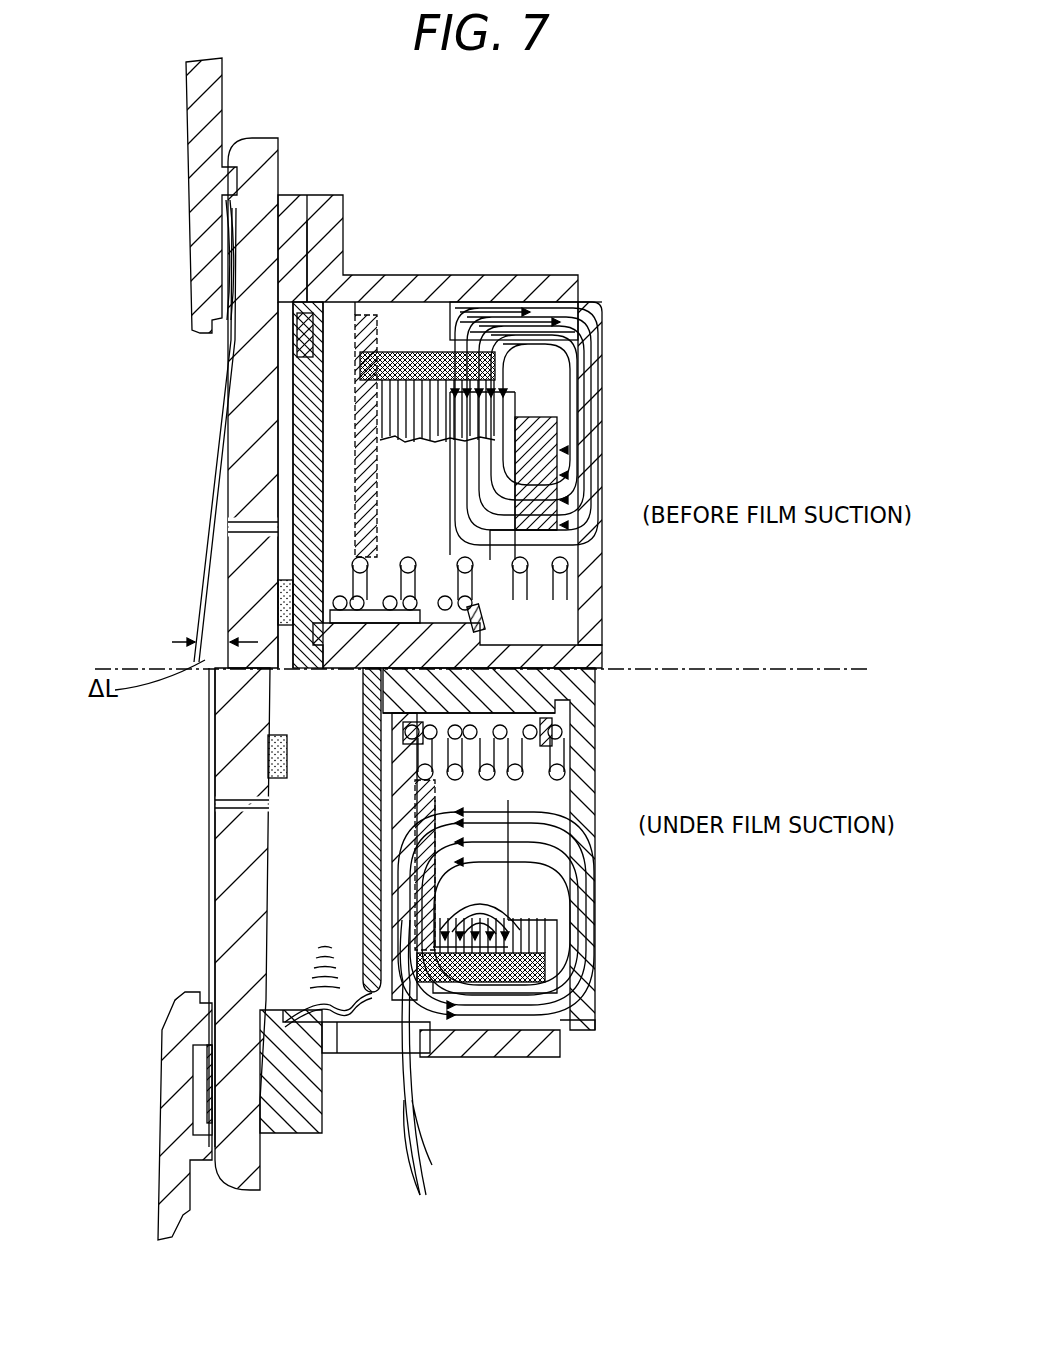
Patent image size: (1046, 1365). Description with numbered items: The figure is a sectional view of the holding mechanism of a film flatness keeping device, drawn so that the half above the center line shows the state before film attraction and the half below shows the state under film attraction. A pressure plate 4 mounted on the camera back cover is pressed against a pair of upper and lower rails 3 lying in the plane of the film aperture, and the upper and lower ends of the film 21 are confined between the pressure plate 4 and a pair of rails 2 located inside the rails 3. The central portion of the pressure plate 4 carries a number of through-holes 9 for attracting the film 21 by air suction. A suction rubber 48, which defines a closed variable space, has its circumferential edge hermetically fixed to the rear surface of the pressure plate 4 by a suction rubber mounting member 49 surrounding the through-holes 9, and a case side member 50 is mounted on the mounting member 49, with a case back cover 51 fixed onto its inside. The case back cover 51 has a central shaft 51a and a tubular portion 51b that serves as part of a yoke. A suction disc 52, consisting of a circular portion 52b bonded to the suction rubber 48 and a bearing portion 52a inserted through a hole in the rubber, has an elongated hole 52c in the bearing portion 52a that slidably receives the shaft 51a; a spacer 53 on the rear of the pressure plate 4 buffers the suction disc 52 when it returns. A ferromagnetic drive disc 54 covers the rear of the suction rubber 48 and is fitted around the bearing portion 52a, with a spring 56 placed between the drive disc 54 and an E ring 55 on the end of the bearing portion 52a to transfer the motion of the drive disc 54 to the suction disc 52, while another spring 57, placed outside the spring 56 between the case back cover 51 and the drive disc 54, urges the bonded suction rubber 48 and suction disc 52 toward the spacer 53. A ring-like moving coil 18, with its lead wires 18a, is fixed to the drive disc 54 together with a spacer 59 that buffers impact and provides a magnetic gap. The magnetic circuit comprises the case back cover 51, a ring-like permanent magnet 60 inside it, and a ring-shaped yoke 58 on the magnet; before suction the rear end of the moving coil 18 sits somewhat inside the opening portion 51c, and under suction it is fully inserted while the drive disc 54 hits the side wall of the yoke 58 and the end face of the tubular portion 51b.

The rails 2 is at (222, 300).
The upper and lower rails 3 is at (232, 200).
The pressure plate 4 is at (258, 152).
The through-holes 9 is at (245, 527).
The moving coil 18 is at (400, 320).
The lead wires 18a is at (428, 1150).
The film 21 is at (203, 578).
The suction rubber 48 is at (290, 430).
The suction rubber mounting member 49 is at (297, 212).
The case side member 50 is at (336, 215).
The case back cover 51 is at (600, 445).
The shaft 51a is at (597, 690).
The tubular portion 51b is at (462, 300).
The opening portion 51c is at (603, 320).
The suction disc 52 is at (305, 398).
The bearing portion 52a is at (268, 760).
The circular portion 52b is at (300, 460).
The elongated hole 52c is at (395, 660).
The spacer 53 is at (282, 600).
The drive disc 54 is at (332, 385).
The E ring 55 is at (520, 680).
The spring 56 is at (505, 632).
The spring 57 is at (560, 590).
The yoke 58 is at (603, 360).
The spacer 59 is at (392, 352).
The permanent magnet 60 is at (597, 420).